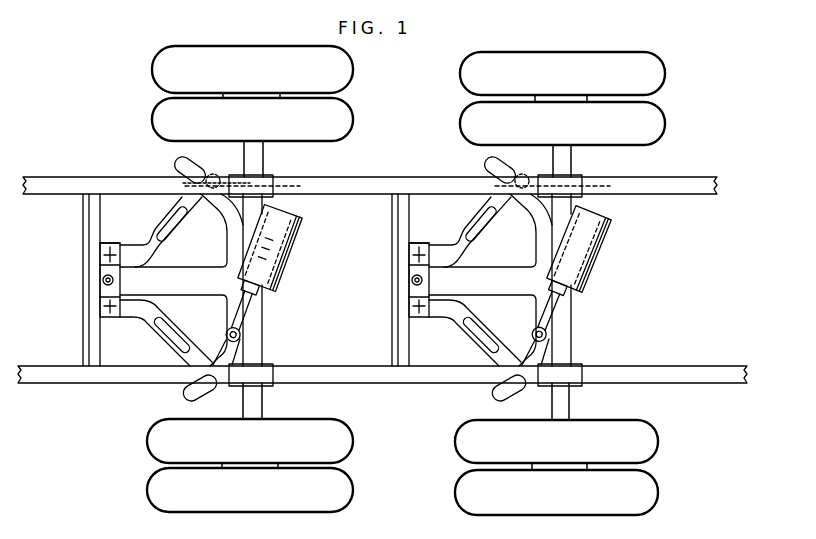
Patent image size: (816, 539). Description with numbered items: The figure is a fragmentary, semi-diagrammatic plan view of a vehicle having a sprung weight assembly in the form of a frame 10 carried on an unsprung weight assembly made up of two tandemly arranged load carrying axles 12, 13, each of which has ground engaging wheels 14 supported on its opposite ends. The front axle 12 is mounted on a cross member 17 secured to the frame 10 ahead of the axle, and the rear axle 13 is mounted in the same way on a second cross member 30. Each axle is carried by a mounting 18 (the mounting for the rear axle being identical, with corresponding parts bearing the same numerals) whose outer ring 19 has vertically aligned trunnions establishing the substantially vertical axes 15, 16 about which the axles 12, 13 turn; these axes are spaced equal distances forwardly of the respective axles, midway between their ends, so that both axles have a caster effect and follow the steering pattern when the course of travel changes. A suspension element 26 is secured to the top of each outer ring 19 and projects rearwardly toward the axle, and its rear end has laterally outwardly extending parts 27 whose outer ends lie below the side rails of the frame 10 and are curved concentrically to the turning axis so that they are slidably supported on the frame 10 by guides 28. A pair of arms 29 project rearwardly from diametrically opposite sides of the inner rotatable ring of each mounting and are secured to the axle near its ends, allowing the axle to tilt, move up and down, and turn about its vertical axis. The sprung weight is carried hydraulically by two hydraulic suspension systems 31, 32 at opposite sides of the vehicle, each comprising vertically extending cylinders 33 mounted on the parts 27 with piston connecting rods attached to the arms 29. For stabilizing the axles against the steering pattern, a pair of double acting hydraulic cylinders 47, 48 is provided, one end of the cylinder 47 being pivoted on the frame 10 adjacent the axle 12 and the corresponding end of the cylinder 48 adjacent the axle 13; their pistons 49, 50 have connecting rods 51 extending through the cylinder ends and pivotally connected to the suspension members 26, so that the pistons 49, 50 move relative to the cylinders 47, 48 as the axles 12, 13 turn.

The frame 10 is at (685, 360).
The front load carrying axle 12 is at (264, 340).
The load carrying axle 13 is at (570, 342).
The ground engaging wheels 14 is at (352, 124).
The vertical axis 15 is at (103, 281).
The vertical axis 16 is at (412, 281).
The cross member 17 is at (94, 333).
The mounting 18 is at (122, 242).
The outer ring 19 is at (100, 258).
The suspension element 26 is at (200, 290).
The laterally outwardly extending parts 27 is at (180, 174).
The guides 28 is at (268, 178).
The arms 29 is at (160, 242).
The second cross member 30 is at (392, 336).
The hydraulic suspension system 31 is at (208, 166).
The hydraulic suspension system 32 is at (188, 394).
The cylinders 33 is at (192, 165).
The double acting hydraulic cylinder 47 is at (302, 228).
The double acting hydraulic cylinder 48 is at (609, 228).
The piston 49 is at (290, 250).
The piston 50 is at (596, 252).
The connecting rods 51 is at (264, 306).